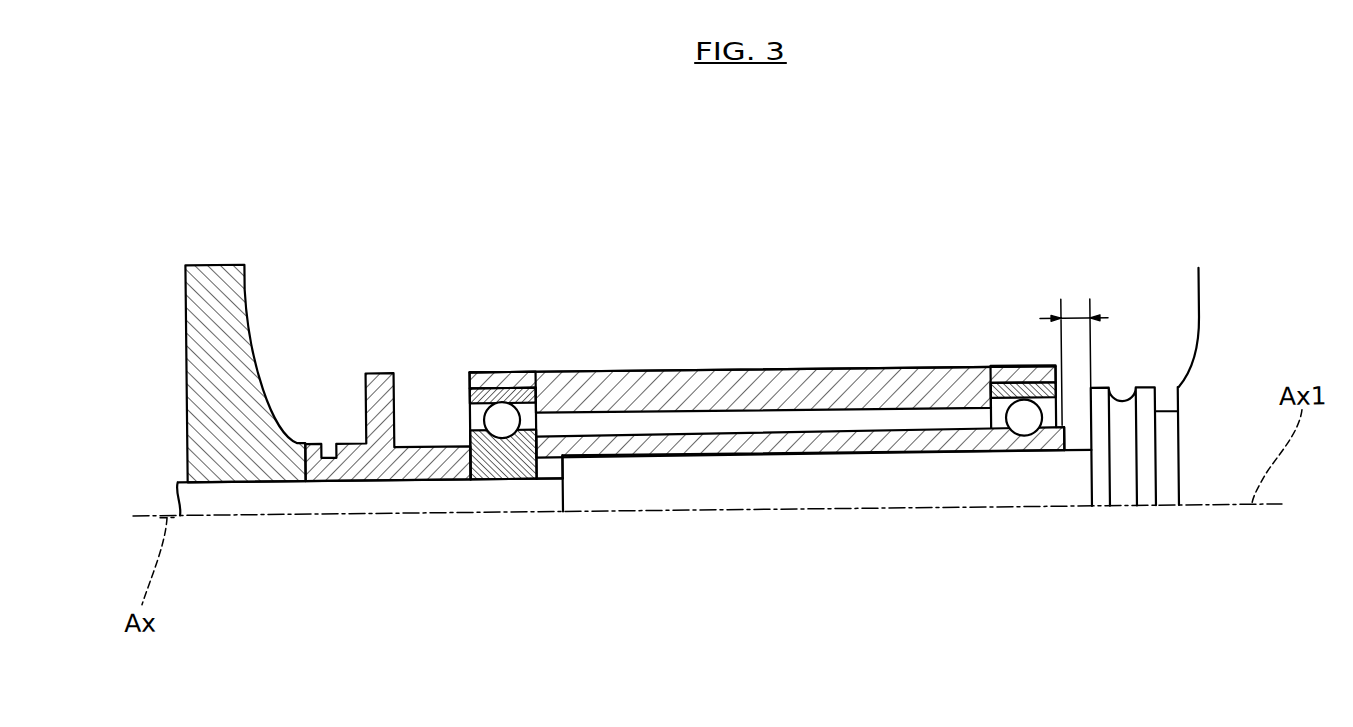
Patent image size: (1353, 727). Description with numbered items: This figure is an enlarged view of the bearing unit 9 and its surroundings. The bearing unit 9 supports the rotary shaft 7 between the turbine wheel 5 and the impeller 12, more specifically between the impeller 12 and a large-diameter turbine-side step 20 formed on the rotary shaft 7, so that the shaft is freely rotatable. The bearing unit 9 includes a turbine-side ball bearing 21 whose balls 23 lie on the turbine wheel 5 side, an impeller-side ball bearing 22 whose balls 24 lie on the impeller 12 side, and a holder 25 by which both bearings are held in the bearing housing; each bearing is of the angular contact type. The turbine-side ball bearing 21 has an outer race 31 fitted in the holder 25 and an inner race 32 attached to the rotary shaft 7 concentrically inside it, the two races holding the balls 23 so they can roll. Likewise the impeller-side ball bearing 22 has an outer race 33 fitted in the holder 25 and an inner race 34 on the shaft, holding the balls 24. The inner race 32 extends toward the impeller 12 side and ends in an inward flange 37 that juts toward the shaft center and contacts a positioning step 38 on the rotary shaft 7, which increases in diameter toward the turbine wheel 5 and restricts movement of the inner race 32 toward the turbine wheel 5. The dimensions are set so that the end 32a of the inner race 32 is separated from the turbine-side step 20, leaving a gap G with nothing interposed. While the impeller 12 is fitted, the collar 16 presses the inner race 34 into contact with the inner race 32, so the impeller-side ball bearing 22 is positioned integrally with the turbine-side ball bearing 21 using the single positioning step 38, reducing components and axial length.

The turbine wheel 5 is at (1193, 346).
The rotary shaft 7 is at (690, 477).
The bearing unit 9 is at (693, 258).
The impeller 12 is at (249, 281).
The collar 16 is at (420, 441).
The turbine-side step 20 is at (1092, 442).
The turbine-side ball bearing 21 is at (1026, 419).
The impeller-side ball bearing 22 is at (504, 416).
The balls 23 is at (1017, 390).
The balls 24 is at (537, 375).
The holder 25 is at (835, 379).
The outer race 31 is at (997, 390).
The inner race 32 is at (930, 458).
The end 32a is at (1070, 437).
The outer race 33 is at (480, 375).
The inner race 34 is at (497, 478).
The inward flange 37 is at (545, 466).
The positioning step 38 is at (553, 465).
The gap G is at (1075, 348).